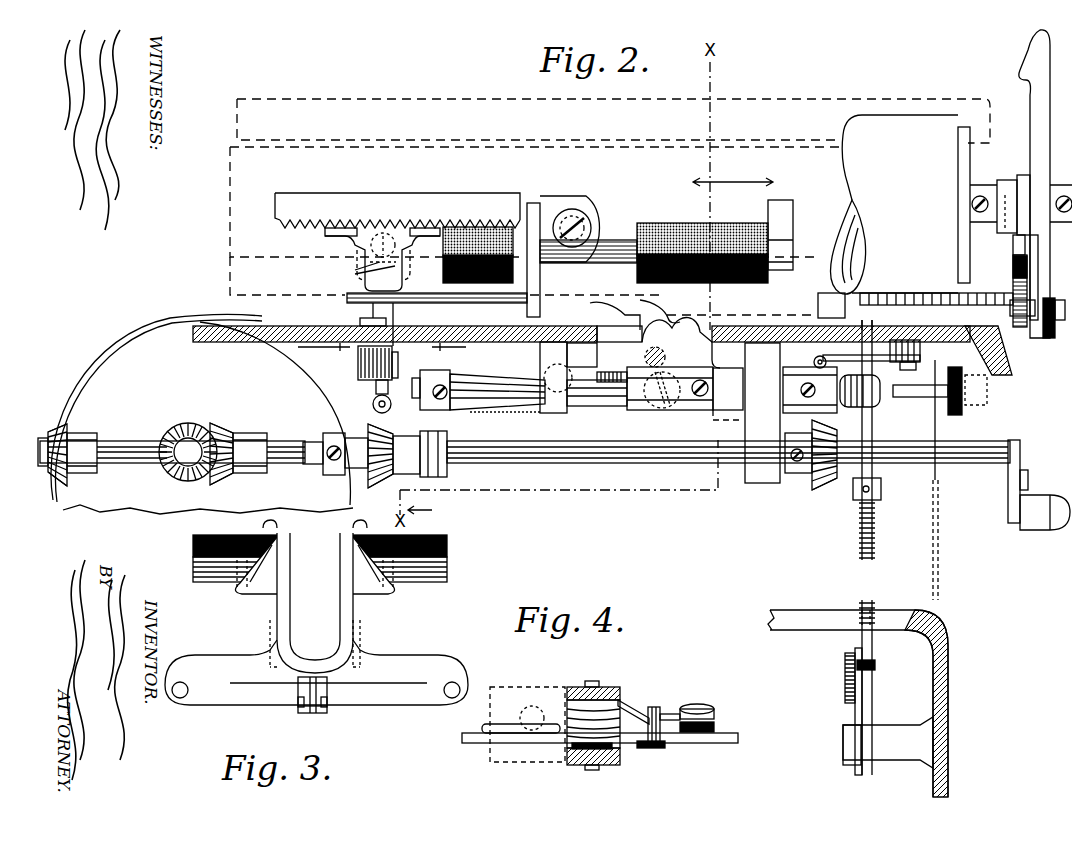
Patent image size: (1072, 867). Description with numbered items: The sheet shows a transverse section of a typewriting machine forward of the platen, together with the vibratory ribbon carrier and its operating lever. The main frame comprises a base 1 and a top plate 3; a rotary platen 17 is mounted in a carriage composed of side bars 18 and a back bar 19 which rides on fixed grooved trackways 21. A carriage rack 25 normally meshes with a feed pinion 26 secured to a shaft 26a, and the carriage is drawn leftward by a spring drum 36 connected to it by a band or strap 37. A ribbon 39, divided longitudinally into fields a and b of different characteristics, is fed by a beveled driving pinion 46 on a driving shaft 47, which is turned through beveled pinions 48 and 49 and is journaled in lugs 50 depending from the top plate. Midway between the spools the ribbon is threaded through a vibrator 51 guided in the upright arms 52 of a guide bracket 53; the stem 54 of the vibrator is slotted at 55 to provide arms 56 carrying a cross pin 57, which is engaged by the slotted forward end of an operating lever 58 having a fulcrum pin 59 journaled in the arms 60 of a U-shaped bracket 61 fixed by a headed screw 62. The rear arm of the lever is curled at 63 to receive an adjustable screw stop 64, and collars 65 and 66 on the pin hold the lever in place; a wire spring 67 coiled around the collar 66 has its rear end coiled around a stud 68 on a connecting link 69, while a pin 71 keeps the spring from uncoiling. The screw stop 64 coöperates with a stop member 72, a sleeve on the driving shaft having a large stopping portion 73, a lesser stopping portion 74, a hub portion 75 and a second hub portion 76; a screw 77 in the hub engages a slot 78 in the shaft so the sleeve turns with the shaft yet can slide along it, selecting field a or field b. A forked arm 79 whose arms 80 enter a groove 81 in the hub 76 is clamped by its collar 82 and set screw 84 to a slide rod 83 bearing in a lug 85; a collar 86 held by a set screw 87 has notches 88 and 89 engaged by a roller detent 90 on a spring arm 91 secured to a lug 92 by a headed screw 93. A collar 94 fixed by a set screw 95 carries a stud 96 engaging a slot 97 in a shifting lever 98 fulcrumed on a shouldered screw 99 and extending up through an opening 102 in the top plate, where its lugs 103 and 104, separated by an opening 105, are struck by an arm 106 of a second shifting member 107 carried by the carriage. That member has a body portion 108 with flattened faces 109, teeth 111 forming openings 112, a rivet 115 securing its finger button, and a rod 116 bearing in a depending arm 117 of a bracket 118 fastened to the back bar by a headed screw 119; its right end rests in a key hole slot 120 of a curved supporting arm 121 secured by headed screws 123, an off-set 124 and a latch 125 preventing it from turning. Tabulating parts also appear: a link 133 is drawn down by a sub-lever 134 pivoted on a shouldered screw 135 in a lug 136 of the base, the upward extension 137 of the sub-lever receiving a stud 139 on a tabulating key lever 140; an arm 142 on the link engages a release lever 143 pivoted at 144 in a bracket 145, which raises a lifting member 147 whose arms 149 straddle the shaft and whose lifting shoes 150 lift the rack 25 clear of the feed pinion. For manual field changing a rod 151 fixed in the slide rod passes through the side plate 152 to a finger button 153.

In FIG. 2, the base 1 is at (948, 688).
In FIG. 2, the top plate 3 is at (270, 328).
In FIG. 2, the rotary platen 17 is at (900, 118).
In FIG. 2, the side bars 18 is at (1052, 157).
In FIG. 2, the back bar 19 is at (230, 188).
In FIG. 2, the grooved trackways 21 is at (237, 113).
In FIG. 2, the carriage rack 25 is at (432, 200).
In FIG. 2, the feed pinion 26 is at (403, 268).
In FIG. 2, the feed pinion shaft 26a is at (383, 232).
In FIG. 2, the spring drum 36 is at (100, 352).
In FIG. 2, the band or strap 37 is at (66, 376).
In FIG. 3, the ribbon 39 is at (447, 556).
In FIG. 2, the beveled driving pinion 46 is at (58, 476).
In FIG. 2, the driving shaft 47 is at (138, 464).
In FIG. 2, the beveled pinion 48 is at (220, 424).
In FIG. 2, the beveled pinion 49 is at (186, 424).
In FIG. 2, the lugs 50 is at (762, 484).
In FIG. 3, the vibratory ribbon carrier 51 is at (258, 588).
In FIG. 3, the upright arms 52 is at (340, 608).
In FIG. 3, the guide bracket 53 is at (388, 664).
In FIG. 3, the stem 54 is at (327, 690).
In FIG. 3, the slot 55 is at (298, 690).
In FIG. 3, the arms 56 is at (298, 704).
In FIG. 3, the cross pin 57 is at (312, 713).
In FIG. 4, the operating lever 58 is at (474, 746).
In FIG. 2, the fulcrum pin 59 is at (398, 365).
In FIG. 4, the fulcrum pin 59 is at (592, 681).
In FIG. 2, the bracket arms 60 is at (360, 368).
In FIG. 4, the bracket arms 60 is at (606, 688).
In FIG. 2, the U-shaped bracket 61 is at (360, 348).
In FIG. 4, the U-shaped bracket 61 is at (512, 690).
In FIG. 2, the headed screw 62 is at (393, 324).
In FIG. 2, the curled end 63 is at (373, 398).
In FIG. 2, the adjustable screw stop 64 is at (374, 406).
In FIG. 4, the narrow collar 65 is at (615, 746).
In FIG. 4, the wide collar 66 is at (618, 700).
In FIG. 4, the wire spring 67 is at (520, 735).
In FIG. 4, the headed stud 68 is at (698, 733).
In FIG. 4, the connecting link 69 is at (716, 726).
In FIG. 4, the pin 71 is at (660, 712).
In FIG. 2, the stop member 72 is at (406, 444).
In FIG. 2, the large stopping portion 73 is at (385, 476).
In FIG. 2, the lesser stopping portion 74 is at (355, 470).
In FIG. 2, the hub portion 75 is at (340, 478).
In FIG. 2, the second hub portion 76 is at (390, 478).
In FIG. 2, the screw 77 is at (336, 446).
In FIG. 2, the slot 78 is at (314, 466).
In FIG. 2, the forked arm 79 is at (420, 412).
In FIG. 2, the bifurcation arms 80 is at (440, 462).
In FIG. 2, the circumferential groove 81 is at (420, 478).
In FIG. 2, the collar 82 is at (462, 410).
In FIG. 2, the slide rod 83 is at (600, 408).
In FIG. 2, the set screw 84 is at (448, 380).
In FIG. 2, the lug 85 is at (545, 414).
In FIG. 2, the collar 86 is at (790, 408).
In FIG. 2, the set screw 87 is at (800, 392).
In FIG. 2, the notch 88 is at (790, 378).
In FIG. 2, the notch 89 is at (790, 364).
In FIG. 2, the roller detent 90 is at (814, 362).
In FIG. 2, the spring arm 91 is at (875, 338).
In FIG. 2, the lug 92 is at (920, 352).
In FIG. 2, the headed screw 93 is at (910, 370).
In FIG. 2, the collar 94 is at (695, 412).
In FIG. 2, the set screw 95 is at (725, 408).
In FIG. 2, the stud 96 is at (635, 412).
In FIG. 2, the slot 97 is at (660, 412).
In FIG. 2, the shifting member 98 is at (677, 329).
In FIG. 2, the shouldered screw 99 is at (644, 357).
In FIG. 2, the opening 102 is at (602, 330).
In FIG. 2, the lug 103 is at (645, 320).
In FIG. 2, the lug 104 is at (713, 360).
In FIG. 2, the opening 105 is at (648, 300).
In FIG. 2, the arm 106 is at (825, 303).
In FIG. 2, the second shifting member 107 is at (936, 309).
In FIG. 2, the body portion 108 is at (584, 302).
In FIG. 2, the flattened faces 109 is at (945, 293).
In FIG. 2, the teeth 111 is at (892, 293).
In FIG. 2, the openings 112 is at (922, 293).
In FIG. 2, the rivet 115 is at (1050, 325).
In FIG. 2, the rod 116 is at (472, 304).
In FIG. 2, the depending arm 117 is at (540, 272).
In FIG. 2, the bracket 118 is at (547, 208).
In FIG. 2, the headed screw 119 is at (582, 225).
In FIG. 2, the key hole slot 120 is at (1030, 245).
In FIG. 2, the supporting arm 121 is at (1013, 306).
In FIG. 2, the headed screws 123 is at (1005, 180).
In FIG. 2, the off-set 124 is at (1028, 325).
In FIG. 2, the latch 125 is at (1038, 272).
In FIG. 2, the link 133 is at (881, 486).
In FIG. 2, the sub-lever 134 is at (855, 713).
In FIG. 2, the shouldered screw 135 is at (850, 762).
In FIG. 2, the lug 136 is at (888, 732).
In FIG. 2, the upward extension 137 is at (873, 684).
In FIG. 2, the stud 139 is at (875, 666).
In FIG. 2, the tabulating key lever 140 is at (845, 660).
In FIG. 2, the arm 142 is at (853, 374).
In FIG. 2, the release lever 143 is at (486, 412).
In FIG. 2, the pivot 144 is at (570, 365).
In FIG. 2, the bracket 145 is at (580, 414).
In FIG. 2, the lifting member 147 is at (380, 313).
In FIG. 2, the arms 149 is at (354, 272).
In FIG. 2, the lifting shoes 150 is at (432, 230).
In FIG. 2, the rod 151 is at (919, 404).
In FIG. 2, the side plate 152 is at (939, 500).
In FIG. 2, the finger button 153 is at (958, 415).
In FIG. 3, the ribbon field a is at (447, 536).
In FIG. 3, the ribbon field b is at (447, 580).